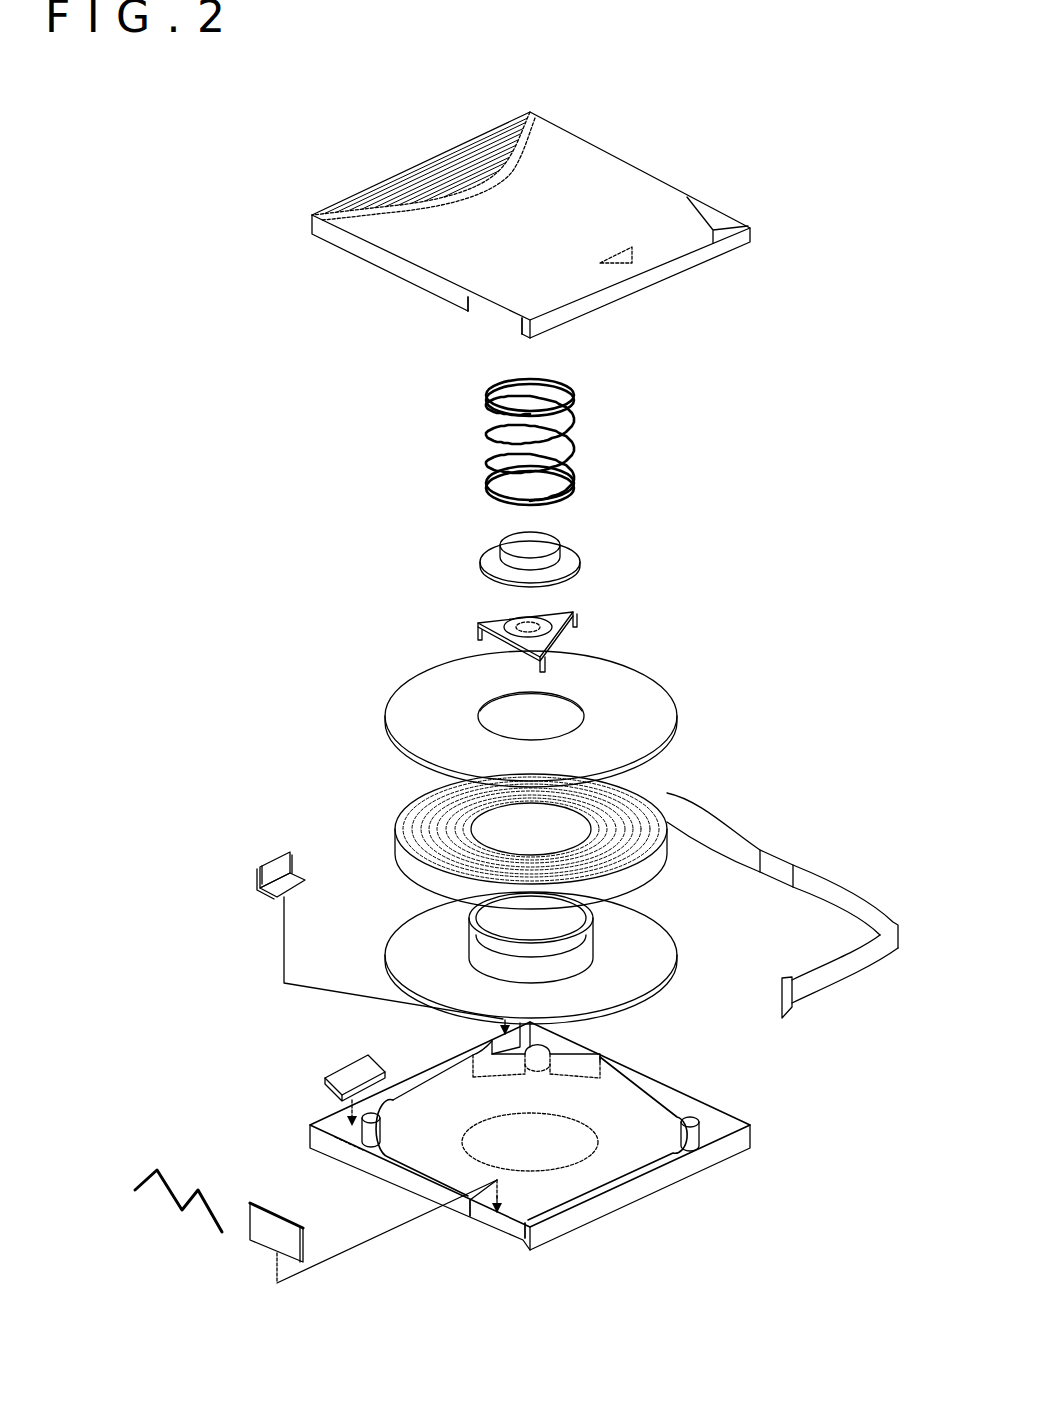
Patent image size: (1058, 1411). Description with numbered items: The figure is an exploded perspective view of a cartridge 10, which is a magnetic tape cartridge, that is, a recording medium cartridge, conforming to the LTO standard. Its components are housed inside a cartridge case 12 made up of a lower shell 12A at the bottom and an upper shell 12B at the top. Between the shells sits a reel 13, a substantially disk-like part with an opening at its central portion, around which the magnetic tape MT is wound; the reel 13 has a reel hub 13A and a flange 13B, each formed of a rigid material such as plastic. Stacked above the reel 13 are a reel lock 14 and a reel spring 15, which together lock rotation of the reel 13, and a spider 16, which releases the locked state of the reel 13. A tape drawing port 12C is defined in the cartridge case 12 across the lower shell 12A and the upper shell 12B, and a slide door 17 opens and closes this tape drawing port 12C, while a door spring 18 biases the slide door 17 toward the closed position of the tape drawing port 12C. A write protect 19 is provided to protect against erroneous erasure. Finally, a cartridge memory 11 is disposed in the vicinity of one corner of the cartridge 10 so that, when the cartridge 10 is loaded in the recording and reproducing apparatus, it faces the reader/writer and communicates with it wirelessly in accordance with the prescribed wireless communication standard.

The cartridge 10 is at (733, 110).
The cartridge memory 11 is at (345, 1062).
The cartridge case 12 is at (113, 658).
The lower shell 12A is at (305, 1135).
The upper shell 12B is at (360, 260).
The tape drawing port 12C is at (473, 302).
The reel 13 is at (293, 725).
The reel hub 13A is at (397, 940).
The flange 13B is at (396, 740).
The reel lock 14 is at (583, 558).
The reel spring 15 is at (575, 428).
The spider 16 is at (572, 612).
The slide door 17 is at (273, 1253).
The door spring 18 is at (170, 1205).
The write protect 19 is at (277, 858).
The magnetic tape MT is at (643, 863).